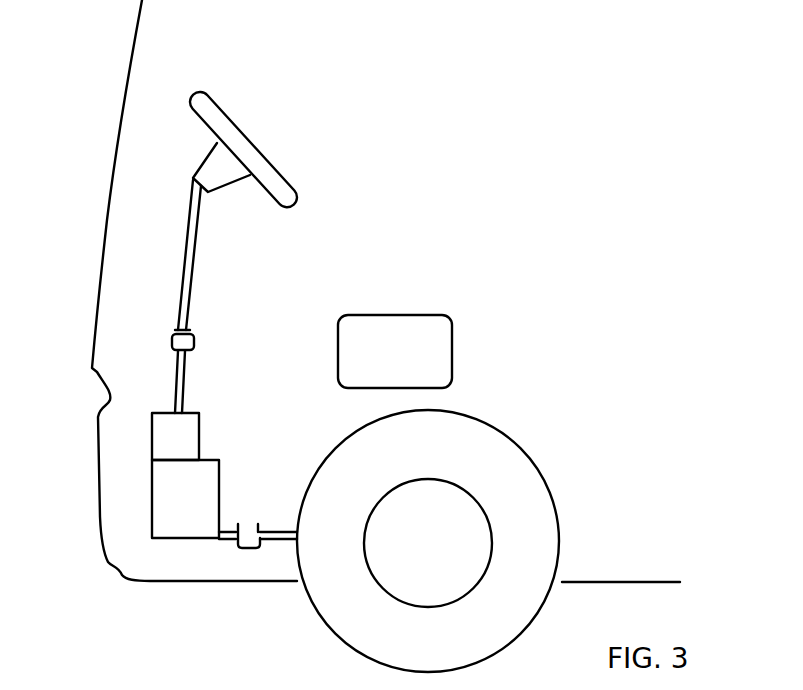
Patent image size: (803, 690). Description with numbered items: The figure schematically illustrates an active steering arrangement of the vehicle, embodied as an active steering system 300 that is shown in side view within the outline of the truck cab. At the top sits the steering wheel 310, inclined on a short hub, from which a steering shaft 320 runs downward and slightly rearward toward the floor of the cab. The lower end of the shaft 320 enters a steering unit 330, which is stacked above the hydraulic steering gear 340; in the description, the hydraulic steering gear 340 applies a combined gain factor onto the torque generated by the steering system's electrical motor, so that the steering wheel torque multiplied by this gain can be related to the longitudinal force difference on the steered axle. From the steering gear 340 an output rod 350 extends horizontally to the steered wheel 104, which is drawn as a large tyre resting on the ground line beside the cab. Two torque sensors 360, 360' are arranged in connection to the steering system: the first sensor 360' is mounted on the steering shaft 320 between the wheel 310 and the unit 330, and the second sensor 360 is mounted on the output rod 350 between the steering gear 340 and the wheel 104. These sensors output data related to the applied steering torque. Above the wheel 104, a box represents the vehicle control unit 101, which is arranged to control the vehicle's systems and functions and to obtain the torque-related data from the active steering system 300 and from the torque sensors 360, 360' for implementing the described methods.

The active steering system 300 is at (587, 113).
The steering wheel 310 is at (233, 108).
The steering column shaft 320 is at (193, 283).
The steering actuator upper unit 330 is at (200, 436).
The hydraulic steering gear 340 is at (219, 485).
The output shaft 350 is at (278, 542).
The torque sensor 360 is at (270, 503).
The torque sensor 360' is at (155, 322).
The control unit 101 is at (395, 351).
The wheel 104 is at (488, 422).